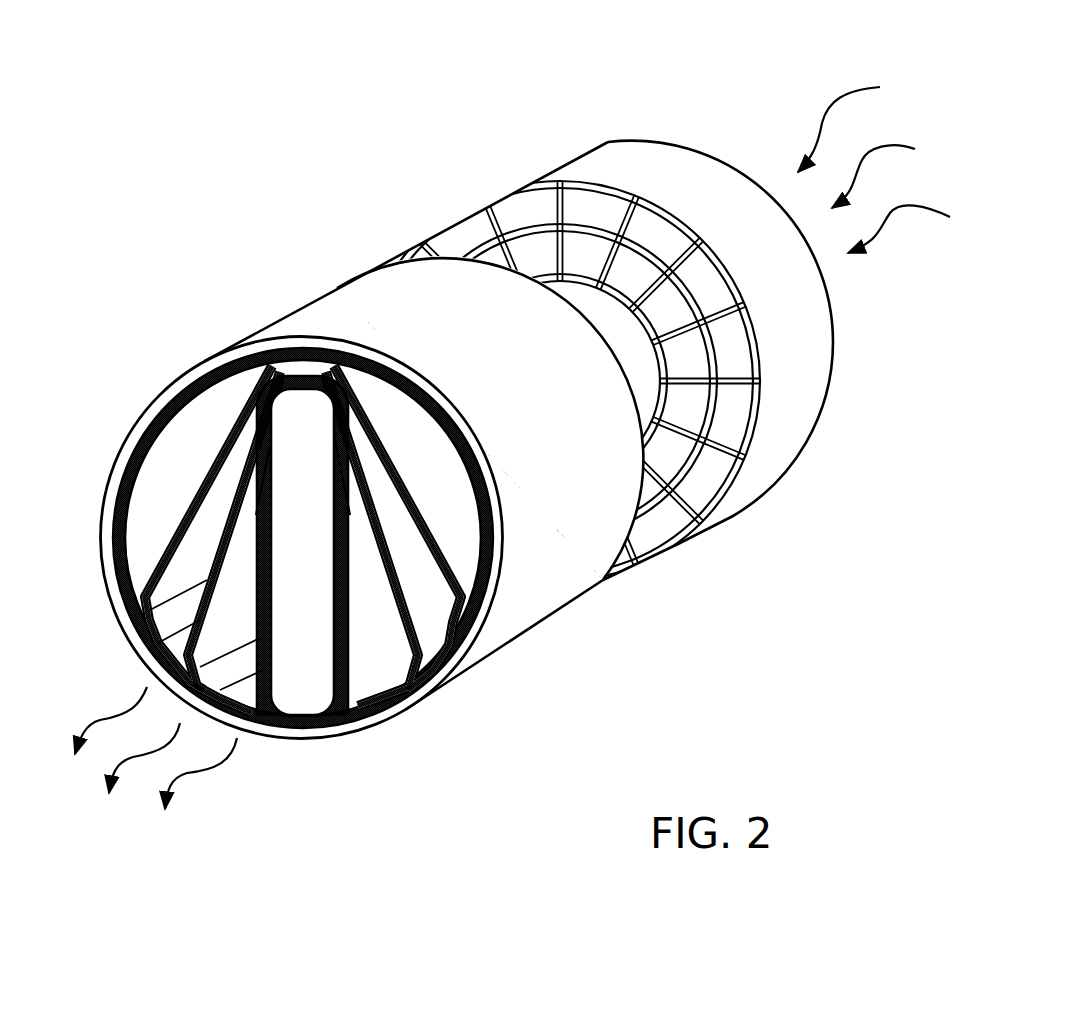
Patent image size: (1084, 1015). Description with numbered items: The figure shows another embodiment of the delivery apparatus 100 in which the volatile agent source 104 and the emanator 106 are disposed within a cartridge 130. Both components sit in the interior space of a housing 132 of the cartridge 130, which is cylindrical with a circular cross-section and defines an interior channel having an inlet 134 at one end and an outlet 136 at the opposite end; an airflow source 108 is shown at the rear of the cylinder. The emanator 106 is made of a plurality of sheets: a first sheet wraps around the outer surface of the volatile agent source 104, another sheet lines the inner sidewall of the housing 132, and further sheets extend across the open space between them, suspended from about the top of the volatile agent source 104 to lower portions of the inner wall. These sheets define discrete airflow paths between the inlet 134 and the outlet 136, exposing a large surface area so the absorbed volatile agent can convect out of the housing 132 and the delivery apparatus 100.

The delivery apparatus 100 is at (294, 84).
The volatile agent source 104 is at (297, 687).
The emanator 106 is at (357, 658).
The airflow source 108 is at (757, 472).
The cartridge 130 is at (252, 306).
The housing 132 is at (520, 615).
The inlet 134 is at (609, 592).
The outlet 136 is at (104, 631).